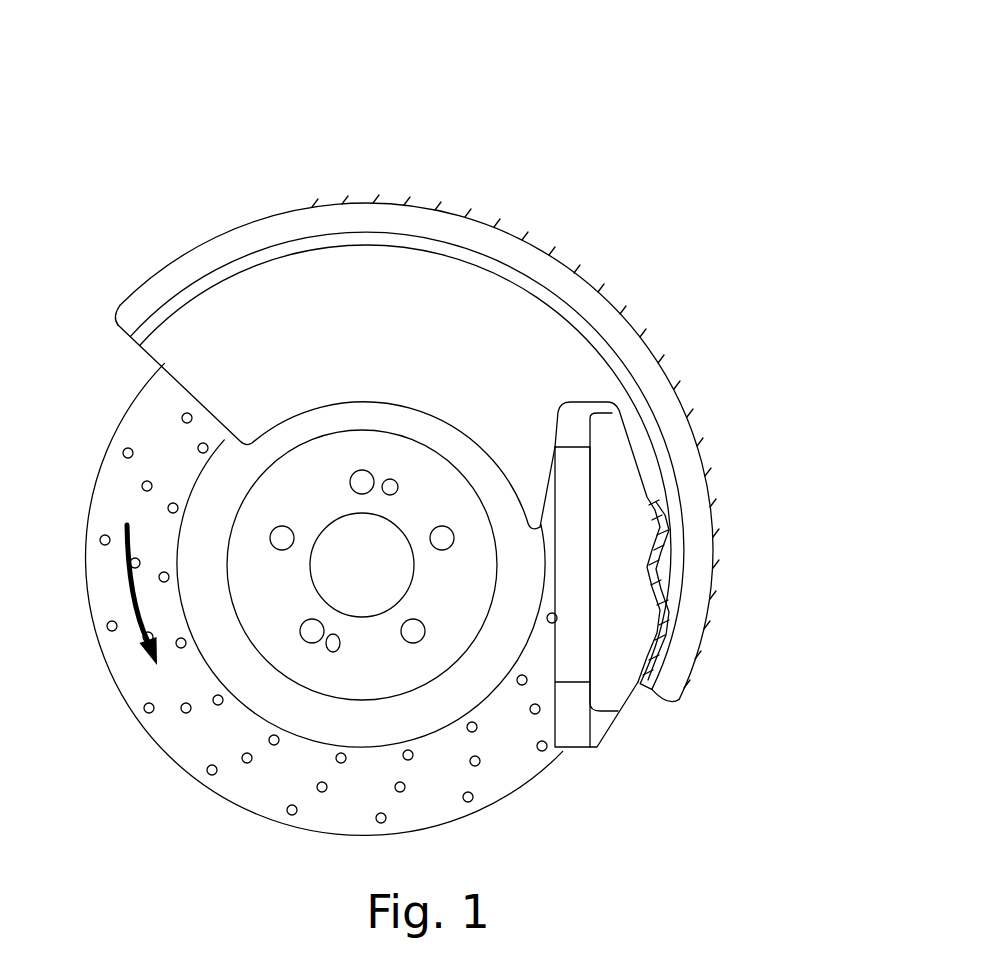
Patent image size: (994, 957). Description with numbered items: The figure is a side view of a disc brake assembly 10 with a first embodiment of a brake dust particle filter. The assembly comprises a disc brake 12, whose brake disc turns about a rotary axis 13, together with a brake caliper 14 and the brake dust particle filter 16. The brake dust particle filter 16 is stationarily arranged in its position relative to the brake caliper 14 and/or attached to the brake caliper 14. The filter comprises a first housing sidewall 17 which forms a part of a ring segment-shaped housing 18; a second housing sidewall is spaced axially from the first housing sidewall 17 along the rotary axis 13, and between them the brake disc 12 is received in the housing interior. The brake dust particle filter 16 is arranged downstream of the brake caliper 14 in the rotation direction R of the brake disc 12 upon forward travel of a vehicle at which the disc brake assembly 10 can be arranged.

The disc brake assembly 10 is at (786, 174).
The disc brake 12 is at (204, 518).
The rotary axis 13 is at (359, 564).
The brake caliper 14 is at (575, 530).
The brake dust particle filter 16 is at (264, 194).
The first housing sidewall 17 is at (477, 312).
The ring segment-shaped housing 18 is at (357, 180).
The rotation direction R is at (127, 587).